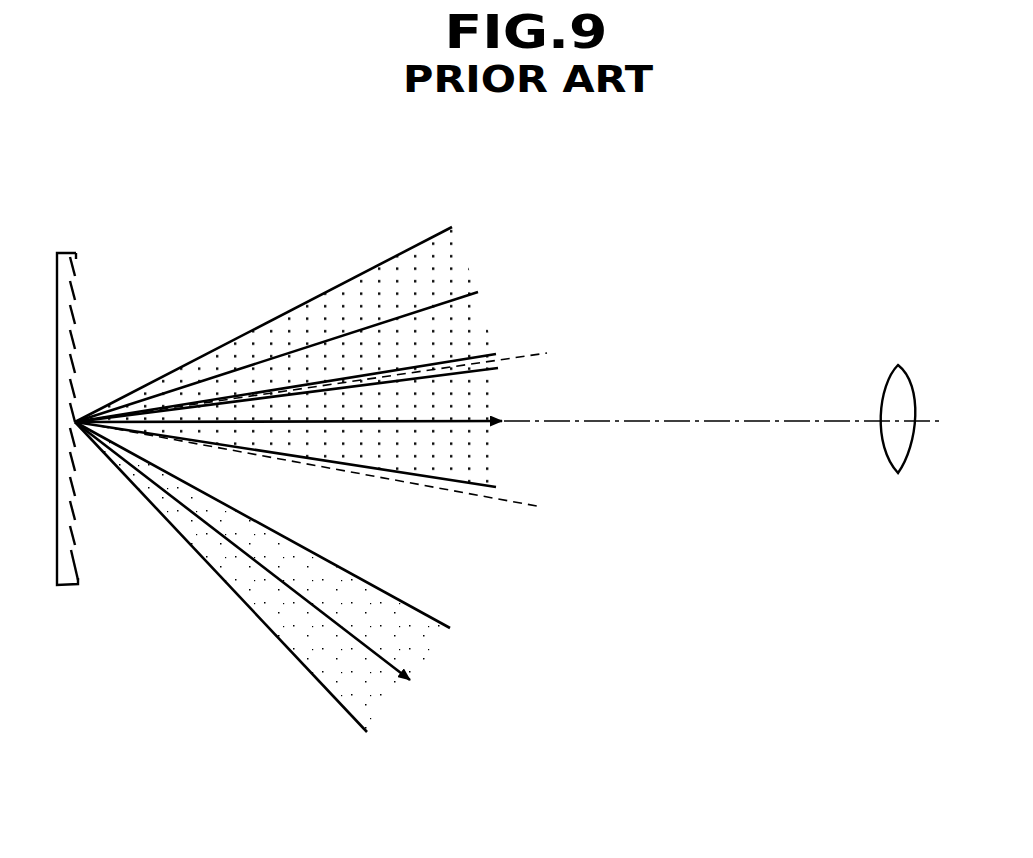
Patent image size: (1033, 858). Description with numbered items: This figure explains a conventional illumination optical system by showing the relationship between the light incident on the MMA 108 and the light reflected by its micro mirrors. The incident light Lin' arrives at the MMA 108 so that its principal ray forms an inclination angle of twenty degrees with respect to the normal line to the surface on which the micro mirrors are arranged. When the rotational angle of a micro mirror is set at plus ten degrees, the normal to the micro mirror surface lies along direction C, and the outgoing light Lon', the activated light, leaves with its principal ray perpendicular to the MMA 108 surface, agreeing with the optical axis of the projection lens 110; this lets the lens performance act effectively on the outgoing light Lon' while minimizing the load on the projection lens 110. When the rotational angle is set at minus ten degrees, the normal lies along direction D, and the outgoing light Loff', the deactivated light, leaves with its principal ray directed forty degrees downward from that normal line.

The MMA 108 is at (57, 253).
The projection lens 110 is at (895, 365).
The incident light Lin' is at (330, 357).
The outgoing light (activated light) Lon' is at (507, 445).
The outgoing light (deactivated light) Loff' is at (309, 577).
The direction C is at (547, 353).
The direction D is at (542, 507).